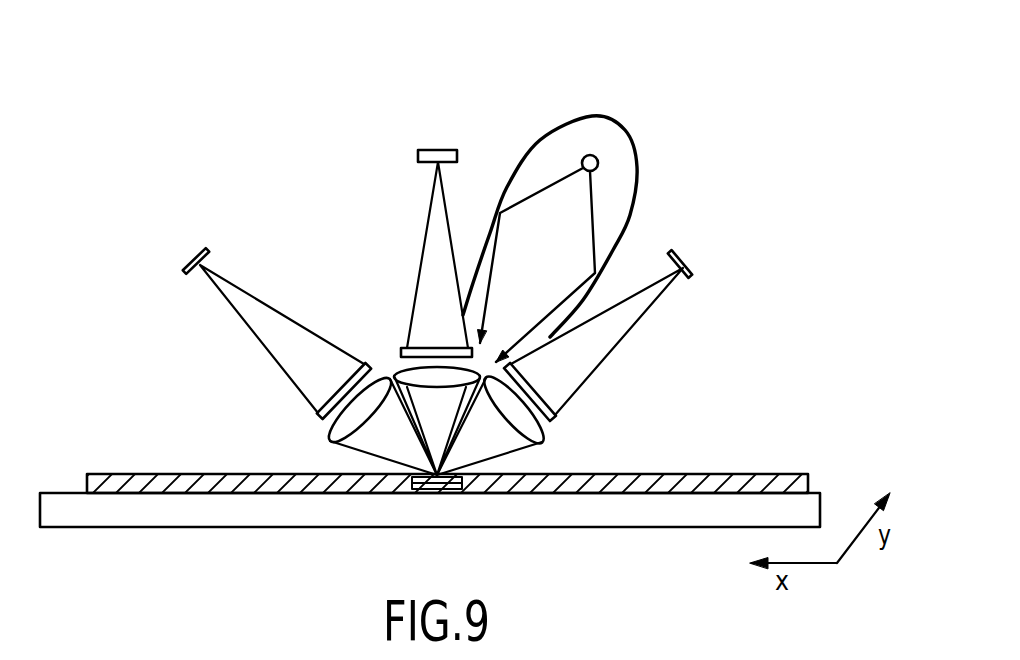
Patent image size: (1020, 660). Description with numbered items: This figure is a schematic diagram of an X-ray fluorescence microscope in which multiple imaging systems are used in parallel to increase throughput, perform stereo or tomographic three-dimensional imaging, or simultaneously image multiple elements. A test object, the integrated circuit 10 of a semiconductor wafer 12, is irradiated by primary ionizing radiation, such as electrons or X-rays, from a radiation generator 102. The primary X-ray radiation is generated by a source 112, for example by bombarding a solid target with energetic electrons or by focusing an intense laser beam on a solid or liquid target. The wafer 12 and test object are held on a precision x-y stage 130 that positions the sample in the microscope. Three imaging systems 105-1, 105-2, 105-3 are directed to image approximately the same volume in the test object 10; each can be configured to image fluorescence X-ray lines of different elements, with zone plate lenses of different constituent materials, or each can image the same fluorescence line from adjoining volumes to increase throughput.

The integrated circuit 10 is at (453, 489).
The semiconductor wafer 12 is at (363, 493).
The radiation generator 102 is at (588, 117).
The imaging system 105-1 is at (240, 290).
The imaging system 105-2 is at (433, 192).
The imaging system 105-3 is at (593, 367).
The source 112 is at (640, 168).
The precision x-y stage 130 is at (820, 508).